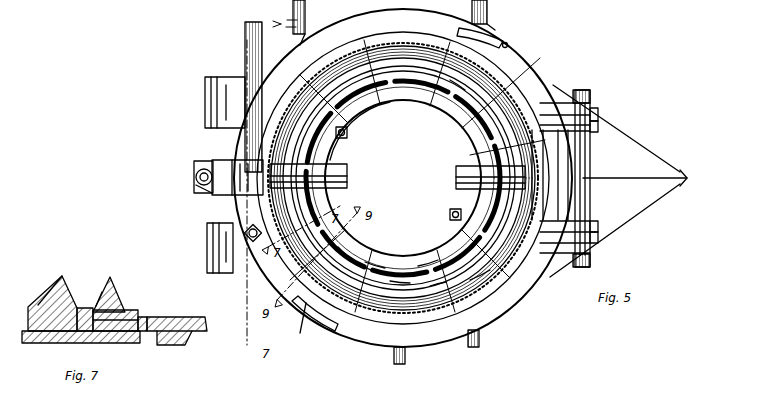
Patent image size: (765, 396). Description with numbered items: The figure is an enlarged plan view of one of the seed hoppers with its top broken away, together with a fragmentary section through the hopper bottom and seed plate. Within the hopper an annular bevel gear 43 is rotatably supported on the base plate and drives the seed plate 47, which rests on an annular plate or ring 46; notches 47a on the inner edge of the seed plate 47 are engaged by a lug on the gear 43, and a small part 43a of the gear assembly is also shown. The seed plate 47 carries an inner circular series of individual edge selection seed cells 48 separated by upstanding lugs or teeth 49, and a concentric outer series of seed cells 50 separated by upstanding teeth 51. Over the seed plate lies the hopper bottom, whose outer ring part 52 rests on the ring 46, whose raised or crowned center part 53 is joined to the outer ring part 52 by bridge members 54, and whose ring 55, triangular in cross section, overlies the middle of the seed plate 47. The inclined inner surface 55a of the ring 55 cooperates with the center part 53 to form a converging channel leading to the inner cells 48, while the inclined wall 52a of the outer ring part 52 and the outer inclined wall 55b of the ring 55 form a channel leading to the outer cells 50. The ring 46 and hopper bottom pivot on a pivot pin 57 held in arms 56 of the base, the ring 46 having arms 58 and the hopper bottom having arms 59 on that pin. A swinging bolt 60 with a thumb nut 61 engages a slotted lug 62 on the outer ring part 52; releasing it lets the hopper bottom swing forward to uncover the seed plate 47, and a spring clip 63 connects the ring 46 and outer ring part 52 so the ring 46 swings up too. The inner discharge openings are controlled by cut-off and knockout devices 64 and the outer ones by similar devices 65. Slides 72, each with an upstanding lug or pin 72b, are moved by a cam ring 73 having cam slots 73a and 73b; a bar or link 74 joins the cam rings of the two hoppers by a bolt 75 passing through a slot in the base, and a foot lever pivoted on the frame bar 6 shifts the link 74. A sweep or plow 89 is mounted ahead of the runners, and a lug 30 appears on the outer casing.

In FIG. 5, the frame bar 6 is at (479, 345).
In FIG. 5, the mounting lug 30 is at (405, 357).
In FIG. 7, the annular bevel gear 43 is at (186, 343).
In FIG. 7, the arm block 43a is at (142, 316).
In FIG. 7, the annular plate or ring 46 is at (48, 339).
In FIG. 5, the seed plate 47 is at (412, 290).
In FIG. 7, the seed plate 47 is at (85, 308).
In FIG. 7, the notches 47a is at (130, 312).
In FIG. 5, the individual edge selection seed cells 48 is at (426, 250).
In FIG. 5, the upstanding lugs or teeth 49 is at (378, 258).
In FIG. 5, the seed cells 50 is at (480, 275).
In FIG. 5, the upstanding teeth 51 is at (452, 295).
In FIG. 7, the outer ring part 52 is at (40, 290).
In FIG. 7, the inclined wall 52a is at (66, 280).
In FIG. 5, the raised or crowned center part 53 is at (405, 185).
In FIG. 5, the bridge members 54 is at (340, 185).
In FIG. 5, the ring 55 is at (418, 100).
In FIG. 7, the ring 55 is at (114, 280).
In FIG. 7, the inclined inner surface 55a is at (126, 295).
In FIG. 7, the outer inclined wall 55b is at (100, 290).
In FIG. 5, the arms 56 is at (598, 128).
In FIG. 5, the pivot pin 57 is at (590, 170).
In FIG. 5, the arms 58 is at (598, 114).
In FIG. 5, the arms 59 is at (592, 98).
In FIG. 5, the swinging bolt 60 is at (193, 179).
In FIG. 5, the thumb nut 61 is at (225, 193).
In FIG. 5, the slotted lug 62 is at (195, 189).
In FIG. 5, the spring clip 63 is at (466, 98).
In FIG. 5, the cut-off and knockout devices 64 is at (347, 133).
In FIG. 5, the cut-off and knock-out devices 65 is at (335, 262).
In FIG. 5, the slides 72 is at (501, 48).
In FIG. 5, the upstanding lug or pin 72b is at (510, 60).
In FIG. 5, the cam ring 73 is at (266, 289).
In FIG. 5, the cam slot 73a is at (340, 325).
In FIG. 5, the cam slot 73b is at (480, 42).
In FIG. 5, the bar or link 74 is at (246, 59).
In FIG. 5, the bolt 75 is at (232, 236).
In FIG. 5, the sweep or plow 89 is at (683, 165).